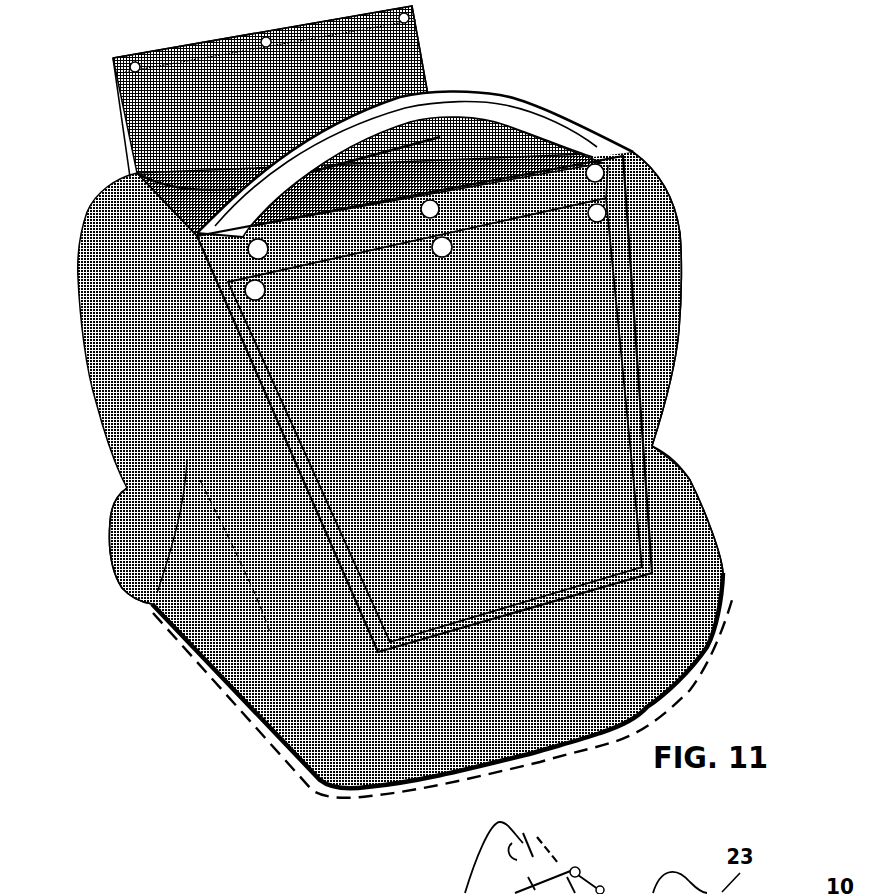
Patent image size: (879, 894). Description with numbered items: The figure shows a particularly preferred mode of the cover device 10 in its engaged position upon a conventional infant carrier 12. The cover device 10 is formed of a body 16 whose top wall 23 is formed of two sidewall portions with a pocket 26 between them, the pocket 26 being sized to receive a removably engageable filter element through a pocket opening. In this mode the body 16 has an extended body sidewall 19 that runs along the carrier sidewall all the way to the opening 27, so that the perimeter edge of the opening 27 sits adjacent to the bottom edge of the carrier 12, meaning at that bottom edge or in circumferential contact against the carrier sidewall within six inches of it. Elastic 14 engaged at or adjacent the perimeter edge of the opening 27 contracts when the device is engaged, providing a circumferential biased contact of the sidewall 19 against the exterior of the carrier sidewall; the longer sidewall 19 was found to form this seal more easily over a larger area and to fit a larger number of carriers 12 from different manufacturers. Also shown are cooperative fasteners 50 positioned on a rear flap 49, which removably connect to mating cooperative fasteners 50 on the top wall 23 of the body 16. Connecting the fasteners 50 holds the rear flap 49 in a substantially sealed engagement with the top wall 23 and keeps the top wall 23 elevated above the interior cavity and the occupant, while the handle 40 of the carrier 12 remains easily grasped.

The cover device 10 is at (713, 331).
The infant carrier 12 is at (170, 687).
The elastic 14 is at (310, 775).
The body 16 is at (637, 538).
The body sidewall 19 is at (280, 686).
The top wall 23 is at (628, 256).
The pocket 26 is at (287, 262).
The opening 27 is at (383, 790).
The handle 40 is at (547, 112).
The rear flap 49 is at (415, 55).
The cooperative fasteners 50 is at (122, 83).